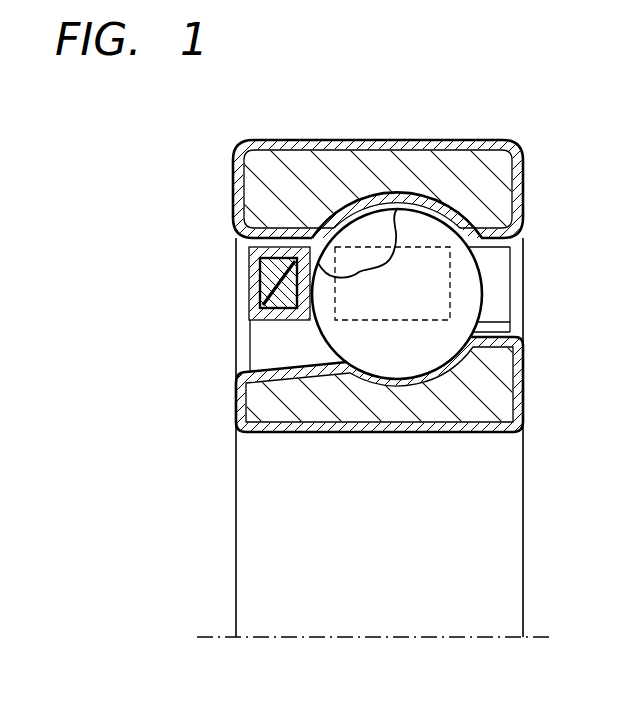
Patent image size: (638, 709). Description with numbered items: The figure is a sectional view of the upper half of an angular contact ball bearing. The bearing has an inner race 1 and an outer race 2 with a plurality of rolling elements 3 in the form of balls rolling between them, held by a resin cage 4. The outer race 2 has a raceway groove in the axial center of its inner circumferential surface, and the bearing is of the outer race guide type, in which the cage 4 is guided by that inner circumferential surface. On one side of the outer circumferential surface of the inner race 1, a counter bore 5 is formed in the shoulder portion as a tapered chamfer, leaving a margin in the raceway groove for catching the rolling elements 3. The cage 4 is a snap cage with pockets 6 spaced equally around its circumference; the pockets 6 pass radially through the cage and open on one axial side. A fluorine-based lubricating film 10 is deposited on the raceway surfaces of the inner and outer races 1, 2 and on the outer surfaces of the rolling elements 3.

The inner race 1 is at (266, 397).
The outer race 2 is at (402, 165).
The rolling elements 3 is at (433, 223).
The resin cage 4 is at (247, 292).
The counter bore 5 is at (279, 370).
The pockets 6 is at (318, 263).
The fluorine-based lubricating film 10 is at (320, 207).